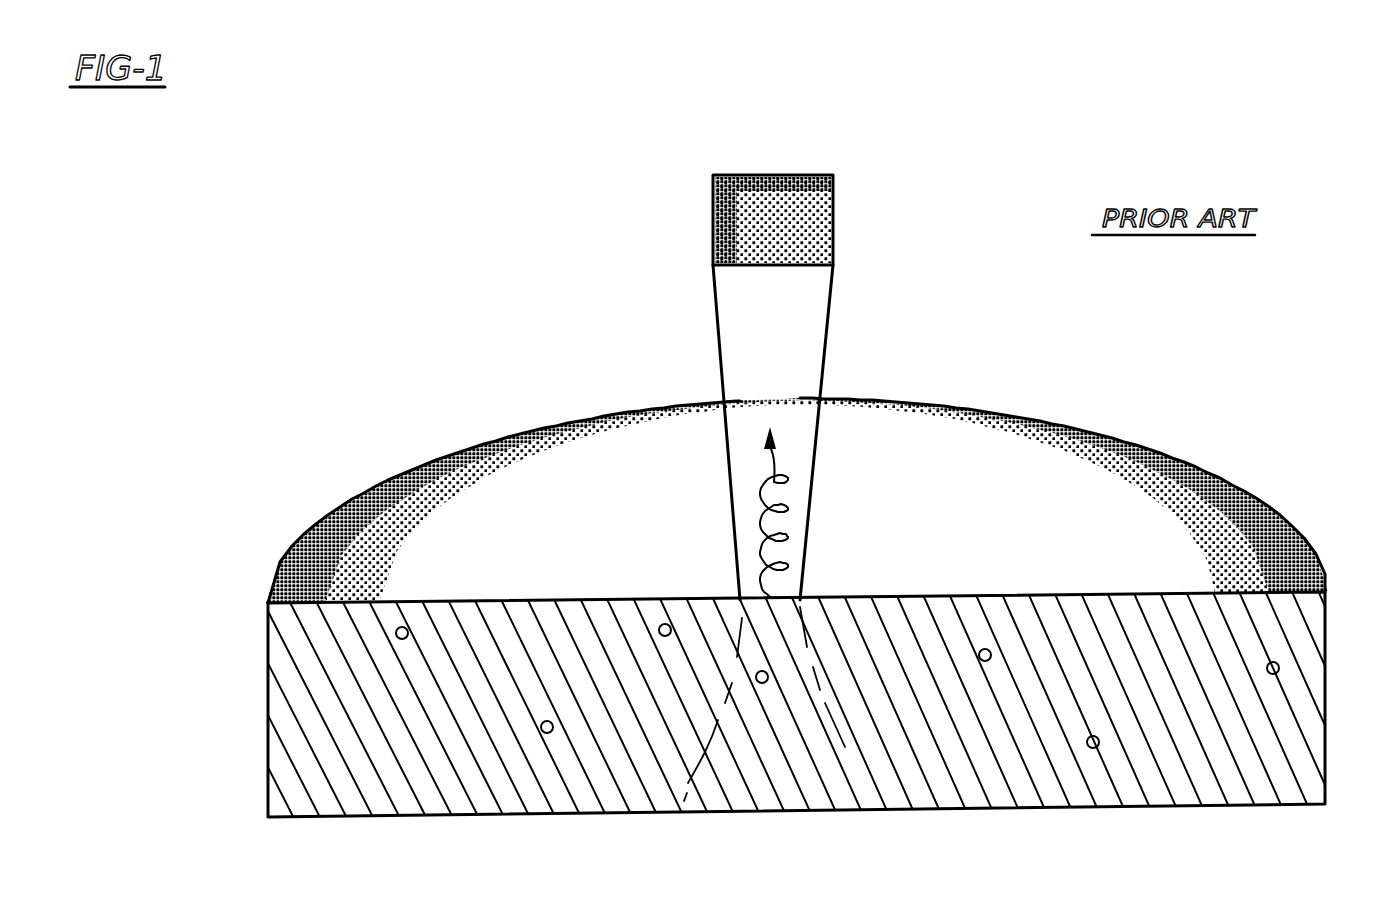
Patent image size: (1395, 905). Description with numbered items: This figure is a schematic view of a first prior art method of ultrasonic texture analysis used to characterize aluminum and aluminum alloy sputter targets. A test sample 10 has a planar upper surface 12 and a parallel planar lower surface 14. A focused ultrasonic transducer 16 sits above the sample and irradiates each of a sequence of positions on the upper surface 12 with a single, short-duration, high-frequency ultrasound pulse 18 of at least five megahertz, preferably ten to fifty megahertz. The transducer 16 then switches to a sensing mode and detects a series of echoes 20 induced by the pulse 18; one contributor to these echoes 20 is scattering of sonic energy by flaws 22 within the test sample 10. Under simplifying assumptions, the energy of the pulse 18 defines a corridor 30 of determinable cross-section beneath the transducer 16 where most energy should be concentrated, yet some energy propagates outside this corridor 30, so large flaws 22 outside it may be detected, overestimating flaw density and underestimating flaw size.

The test sample 10 is at (1198, 478).
The planar upper surface 12 is at (1250, 540).
The planar lower surface 14 is at (1147, 807).
The focused ultrasonic transducer 16 is at (815, 227).
The ultrasound pulse 18 is at (810, 377).
The echoes 20 is at (790, 547).
The flaws 22 is at (1280, 668).
The corridor 30 is at (707, 747).